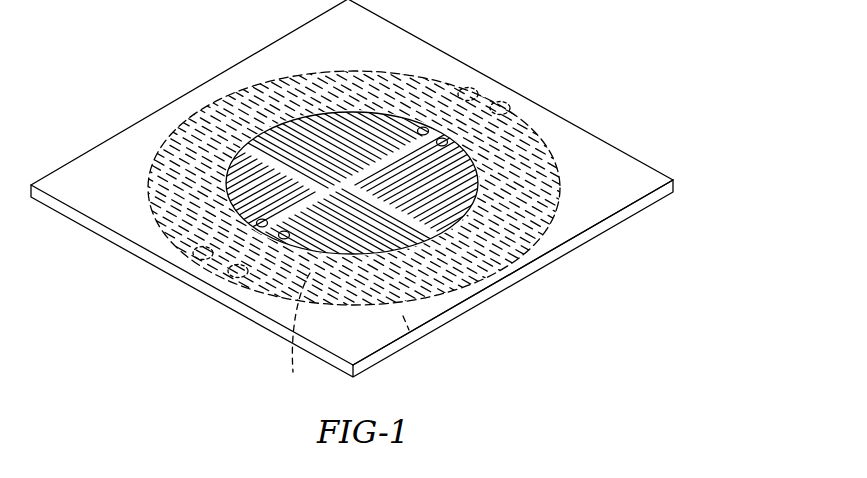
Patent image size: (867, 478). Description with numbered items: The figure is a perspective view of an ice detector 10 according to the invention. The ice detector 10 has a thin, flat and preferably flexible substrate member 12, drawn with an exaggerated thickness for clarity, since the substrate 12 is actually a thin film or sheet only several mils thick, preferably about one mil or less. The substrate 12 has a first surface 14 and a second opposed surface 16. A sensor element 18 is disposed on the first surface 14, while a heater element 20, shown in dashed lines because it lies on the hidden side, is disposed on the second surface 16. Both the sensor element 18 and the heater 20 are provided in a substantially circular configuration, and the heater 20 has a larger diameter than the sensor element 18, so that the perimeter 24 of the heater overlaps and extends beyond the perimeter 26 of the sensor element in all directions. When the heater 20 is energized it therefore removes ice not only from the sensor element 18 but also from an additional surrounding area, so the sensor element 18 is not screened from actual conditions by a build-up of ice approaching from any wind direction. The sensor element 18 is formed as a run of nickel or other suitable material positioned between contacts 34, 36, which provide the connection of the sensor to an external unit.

The ice detector 10 is at (673, 149).
The substrate member 12 is at (575, 124).
The first surface 14 is at (612, 203).
The second opposed surface 16 is at (413, 333).
The sensor element 18 is at (355, 133).
The heater element 20 is at (348, 338).
The perimeter of heater 24 is at (169, 134).
The perimeter of sensor element 26 is at (336, 110).
The contact 34 is at (441, 130).
The contact 36 is at (263, 231).